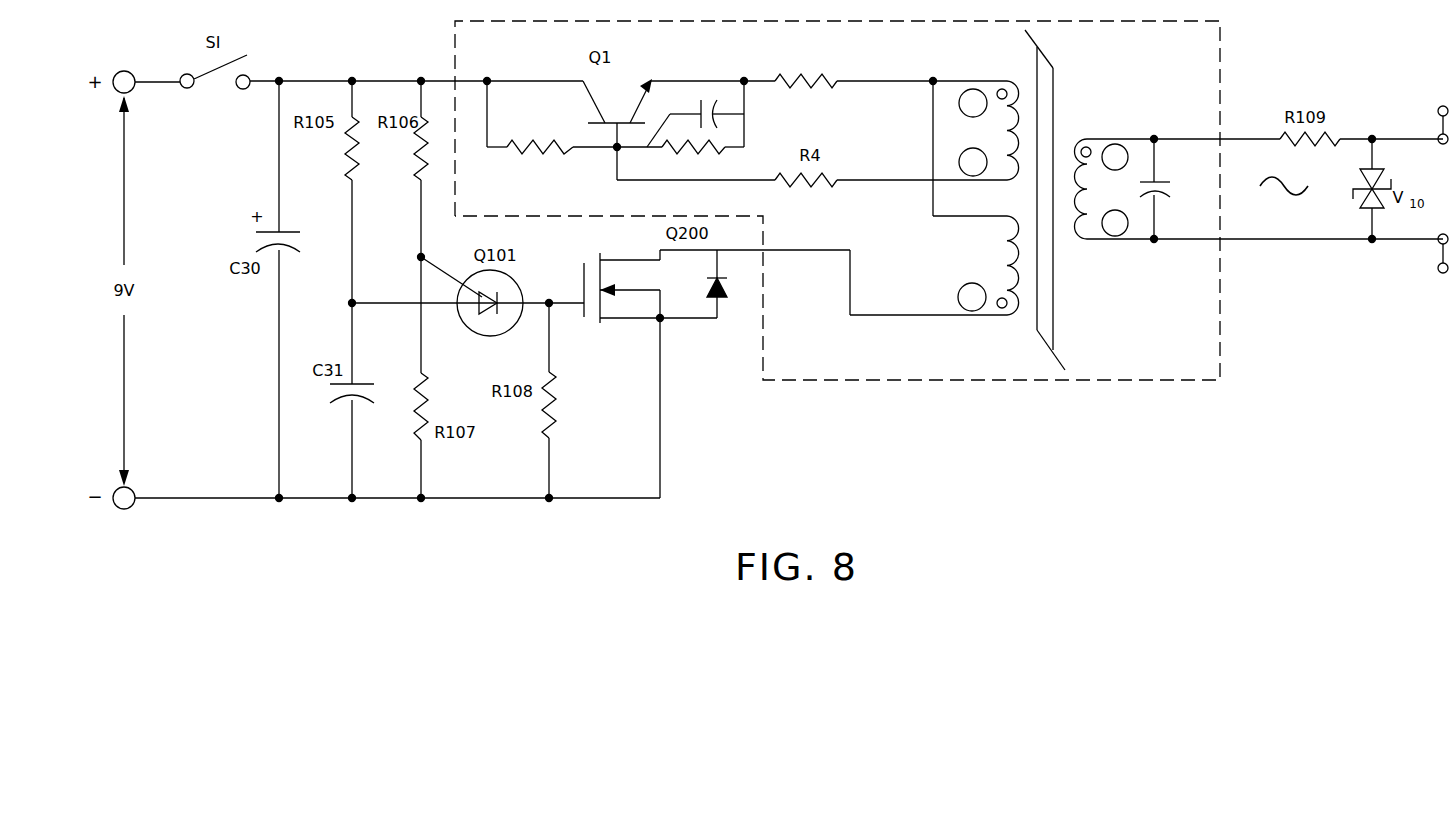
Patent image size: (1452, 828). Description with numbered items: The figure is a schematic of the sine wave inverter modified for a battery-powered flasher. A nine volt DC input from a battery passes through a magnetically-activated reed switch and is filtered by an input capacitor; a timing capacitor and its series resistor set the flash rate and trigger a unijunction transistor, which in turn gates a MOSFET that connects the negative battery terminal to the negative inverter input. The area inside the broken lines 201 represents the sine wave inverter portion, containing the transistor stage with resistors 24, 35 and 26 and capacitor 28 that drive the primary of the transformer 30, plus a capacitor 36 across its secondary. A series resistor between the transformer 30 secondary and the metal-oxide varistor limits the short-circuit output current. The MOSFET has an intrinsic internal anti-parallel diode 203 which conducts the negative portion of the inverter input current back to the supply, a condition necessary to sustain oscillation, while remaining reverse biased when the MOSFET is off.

The resistor 24 is at (535, 152).
The resistor 26 is at (700, 156).
The capacitor 28 is at (706, 99).
The transformer 30 is at (1007, 74).
The resistor 35 is at (798, 70).
The capacitor 36 is at (1163, 198).
The broken lines 201 is at (983, 381).
The anti-parallel diode 203 is at (726, 307).